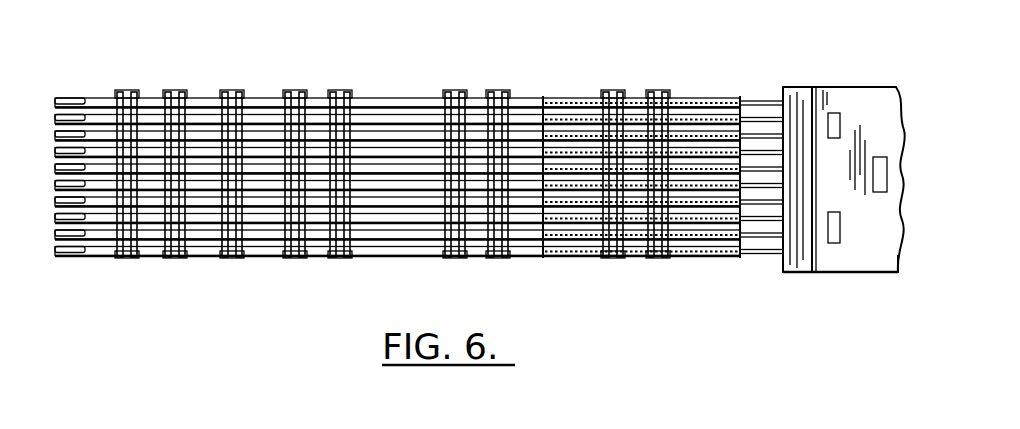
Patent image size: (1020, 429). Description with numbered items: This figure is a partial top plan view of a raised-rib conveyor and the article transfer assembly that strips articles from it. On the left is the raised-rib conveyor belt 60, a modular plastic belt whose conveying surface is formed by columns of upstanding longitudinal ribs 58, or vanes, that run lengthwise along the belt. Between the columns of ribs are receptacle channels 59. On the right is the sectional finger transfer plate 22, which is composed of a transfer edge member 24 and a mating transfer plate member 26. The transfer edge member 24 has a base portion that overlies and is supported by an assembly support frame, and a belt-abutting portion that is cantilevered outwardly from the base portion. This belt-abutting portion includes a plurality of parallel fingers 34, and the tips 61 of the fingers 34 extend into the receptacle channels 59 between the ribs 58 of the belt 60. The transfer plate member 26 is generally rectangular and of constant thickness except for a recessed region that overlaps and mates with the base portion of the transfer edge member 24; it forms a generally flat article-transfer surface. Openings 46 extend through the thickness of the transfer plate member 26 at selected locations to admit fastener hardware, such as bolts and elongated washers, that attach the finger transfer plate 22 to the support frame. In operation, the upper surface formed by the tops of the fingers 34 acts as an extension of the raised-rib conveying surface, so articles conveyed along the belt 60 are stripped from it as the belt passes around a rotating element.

The finger transfer plate 22 is at (887, 239).
The transfer edge member 24 is at (793, 272).
The transfer plate member 26 is at (843, 272).
The fingers 34 is at (762, 147).
The openings 46 is at (833, 243).
The longitudinal ribs 58 is at (700, 250).
The receptacle channels 59 is at (707, 180).
The raised-rib conveyor belt 60 is at (380, 250).
The tips 61 is at (543, 160).